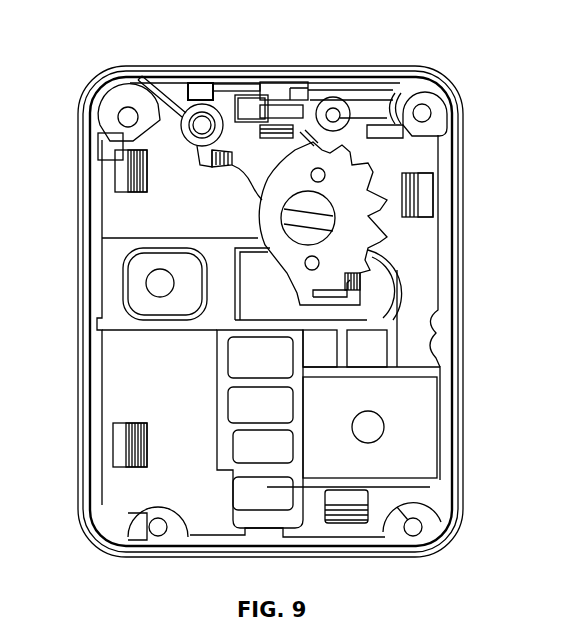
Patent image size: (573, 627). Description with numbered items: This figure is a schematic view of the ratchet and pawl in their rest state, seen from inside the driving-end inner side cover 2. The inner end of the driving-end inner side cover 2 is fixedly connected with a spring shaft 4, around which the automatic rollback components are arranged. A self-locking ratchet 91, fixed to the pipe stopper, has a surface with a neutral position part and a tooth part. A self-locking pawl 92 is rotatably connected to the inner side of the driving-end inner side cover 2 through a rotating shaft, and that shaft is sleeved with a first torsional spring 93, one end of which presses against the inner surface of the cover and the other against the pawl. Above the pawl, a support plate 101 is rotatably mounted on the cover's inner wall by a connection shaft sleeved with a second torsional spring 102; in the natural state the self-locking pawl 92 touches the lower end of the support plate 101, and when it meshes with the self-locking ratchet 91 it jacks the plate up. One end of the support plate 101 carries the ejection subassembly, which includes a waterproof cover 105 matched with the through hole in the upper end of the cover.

The driving-end inner side cover 2 is at (93, 178).
The spring shaft 4 is at (280, 208).
The self-locking ratchet 91 is at (378, 233).
The self-locking pawl 92 is at (240, 140).
The first torsional spring 93 is at (138, 76).
The support plate 101 is at (283, 120).
The second torsional spring 102 is at (333, 108).
The waterproof cover 105 is at (268, 78).